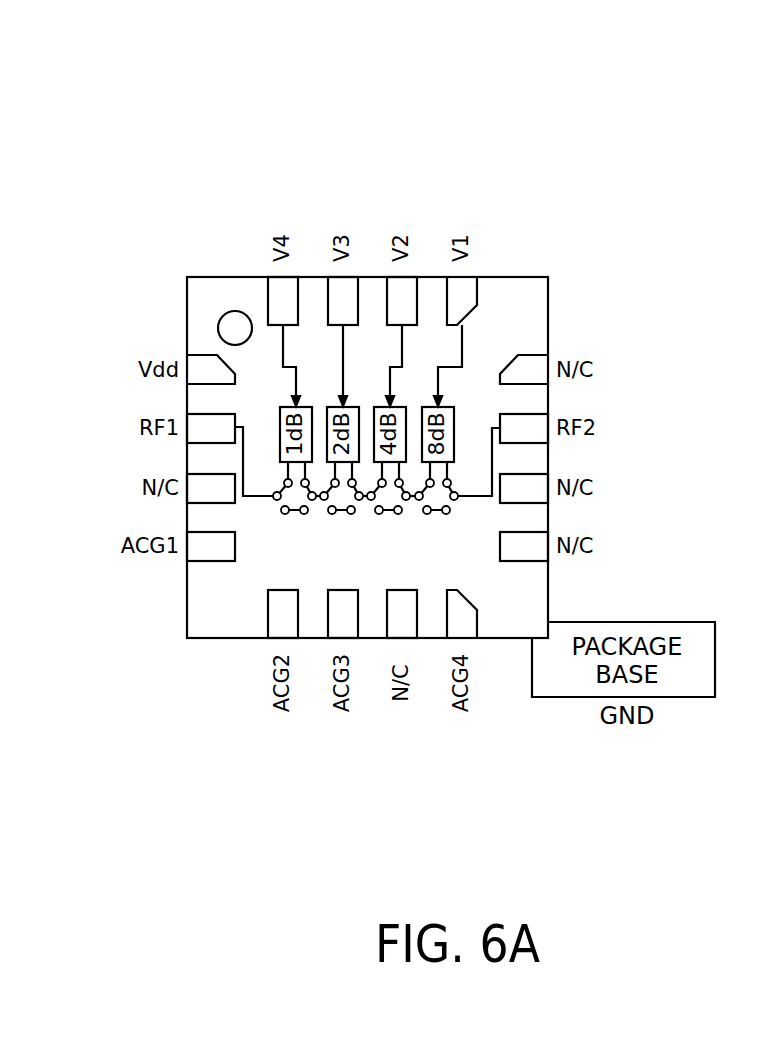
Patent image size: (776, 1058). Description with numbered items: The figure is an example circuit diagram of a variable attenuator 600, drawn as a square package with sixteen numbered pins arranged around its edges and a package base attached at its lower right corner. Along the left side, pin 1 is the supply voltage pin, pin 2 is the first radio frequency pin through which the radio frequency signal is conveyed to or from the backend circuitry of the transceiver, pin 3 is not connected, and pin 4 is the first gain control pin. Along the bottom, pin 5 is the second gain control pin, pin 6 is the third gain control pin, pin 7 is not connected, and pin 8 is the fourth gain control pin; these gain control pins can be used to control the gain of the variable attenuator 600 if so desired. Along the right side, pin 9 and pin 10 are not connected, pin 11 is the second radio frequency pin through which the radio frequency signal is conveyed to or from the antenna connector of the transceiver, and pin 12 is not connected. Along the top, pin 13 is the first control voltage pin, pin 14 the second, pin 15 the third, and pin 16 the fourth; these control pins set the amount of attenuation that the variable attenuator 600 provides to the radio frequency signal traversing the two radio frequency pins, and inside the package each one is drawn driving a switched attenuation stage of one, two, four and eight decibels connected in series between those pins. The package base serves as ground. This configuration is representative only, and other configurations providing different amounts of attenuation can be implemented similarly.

The variable attenuator 600 is at (676, 81).
The pin 1 (Vdd) 1 is at (211, 369).
The pin 2 (RF1) 2 is at (211, 428).
The pin 3 (N/C) 3 is at (211, 488).
The pin 4 (ACG1) 4 is at (211, 546).
The pin 5 (ACG2) 5 is at (283, 614).
The pin 6 (ACG3) 6 is at (343, 614).
The pin 7 (N/C) 7 is at (402, 614).
The pin 8 (ACG4) 8 is at (462, 614).
The pin 9 (N/C) 9 is at (524, 546).
The pin 10 (N/C) 10 is at (524, 488).
The pin 11 (RF2) 11 is at (524, 428).
The pin 12 (N/C) 12 is at (524, 369).
The pin 13 (V1) 13 is at (462, 301).
The pin 14 (V2) 14 is at (402, 301).
The pin 15 (V3) 15 is at (343, 301).
The pin 16 (V4) 16 is at (283, 301).